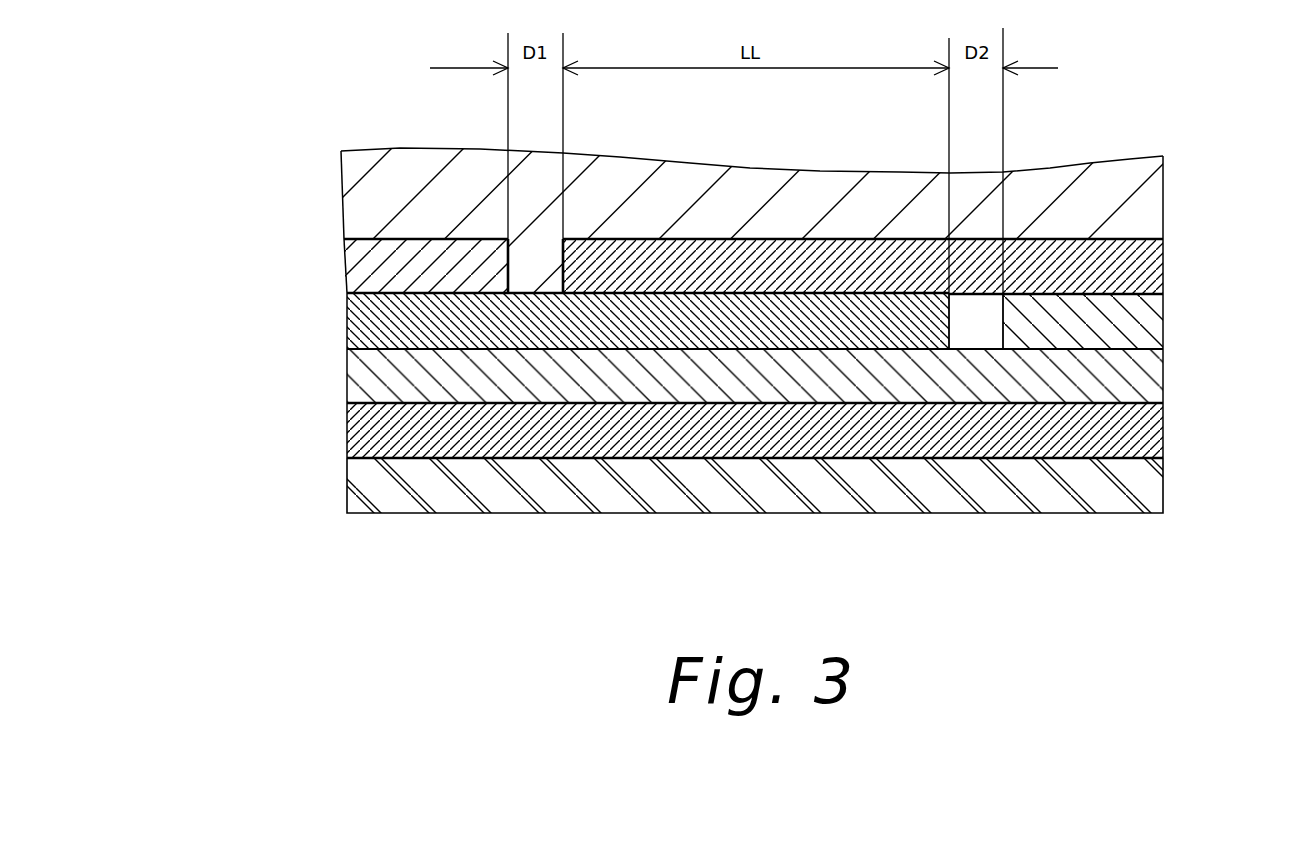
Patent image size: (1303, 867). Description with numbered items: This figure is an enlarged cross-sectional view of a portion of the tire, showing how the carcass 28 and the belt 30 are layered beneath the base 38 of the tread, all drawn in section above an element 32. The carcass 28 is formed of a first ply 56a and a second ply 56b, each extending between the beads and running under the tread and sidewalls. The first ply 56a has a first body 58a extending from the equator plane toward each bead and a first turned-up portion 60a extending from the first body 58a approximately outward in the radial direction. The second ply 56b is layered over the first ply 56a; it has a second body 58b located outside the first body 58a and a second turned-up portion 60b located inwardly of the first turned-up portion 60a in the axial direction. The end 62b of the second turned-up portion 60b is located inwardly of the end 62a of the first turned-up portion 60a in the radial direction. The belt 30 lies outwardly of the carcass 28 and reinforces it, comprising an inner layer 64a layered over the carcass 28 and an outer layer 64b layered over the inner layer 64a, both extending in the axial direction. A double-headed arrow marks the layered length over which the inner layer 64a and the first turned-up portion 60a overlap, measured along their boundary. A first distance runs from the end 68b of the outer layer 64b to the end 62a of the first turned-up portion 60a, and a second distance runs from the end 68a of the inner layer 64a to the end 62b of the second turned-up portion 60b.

The carcass 28 is at (435, 403).
The belt 30 is at (641, 294).
The substrate 32 is at (347, 497).
The base 38 is at (342, 193).
The first ply 56a is at (347, 437).
The second ply 56b is at (347, 378).
The first body 58a is at (1112, 438).
The second body 58b is at (1117, 380).
The first turned-up portion 60a is at (1122, 268).
The second turned-up portion 60b is at (1118, 324).
The end of first turned-up portion 62a is at (559, 264).
The end of second turned-up portion 62b is at (1003, 321).
The inner layer 64a is at (349, 327).
The outer layer 64b is at (345, 272).
The end of inner layer 68a is at (950, 321).
The end of outer layer 68b is at (511, 262).